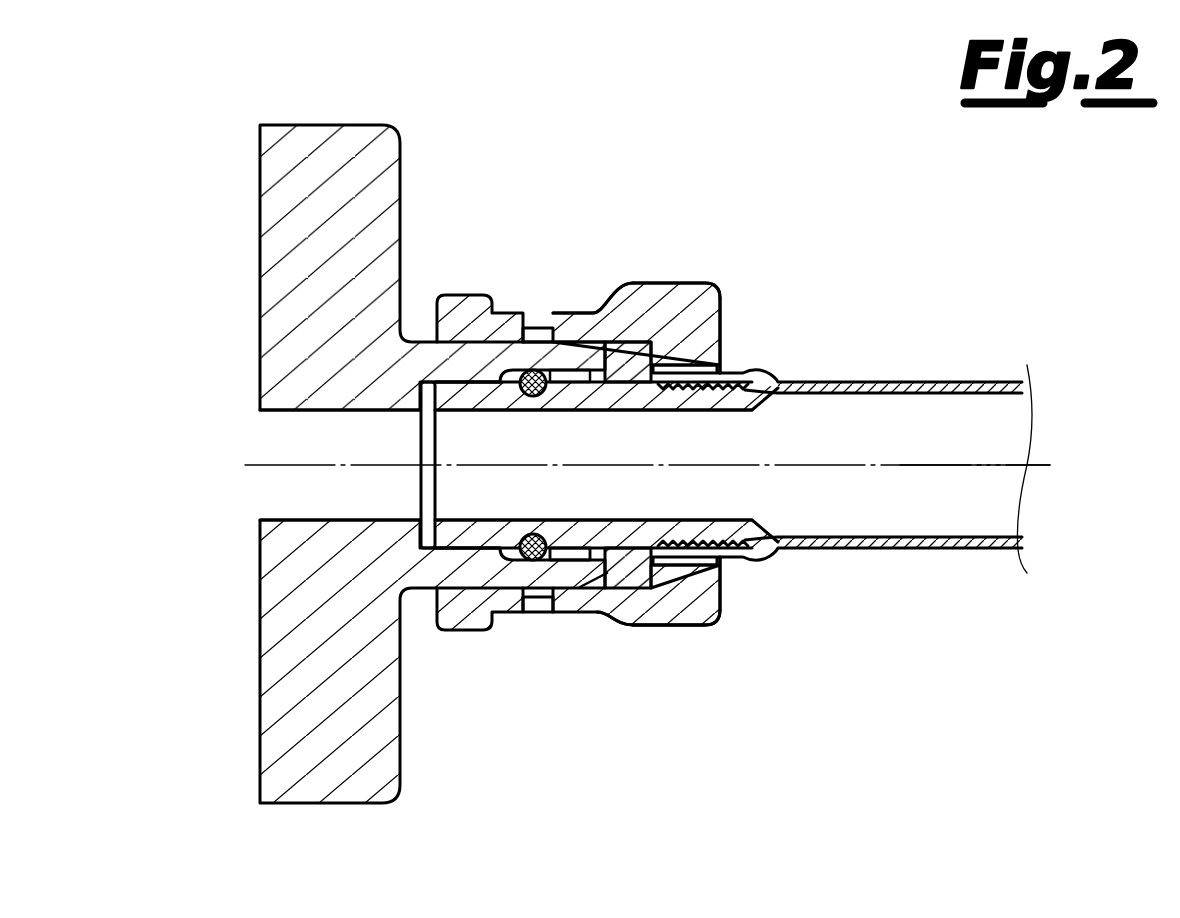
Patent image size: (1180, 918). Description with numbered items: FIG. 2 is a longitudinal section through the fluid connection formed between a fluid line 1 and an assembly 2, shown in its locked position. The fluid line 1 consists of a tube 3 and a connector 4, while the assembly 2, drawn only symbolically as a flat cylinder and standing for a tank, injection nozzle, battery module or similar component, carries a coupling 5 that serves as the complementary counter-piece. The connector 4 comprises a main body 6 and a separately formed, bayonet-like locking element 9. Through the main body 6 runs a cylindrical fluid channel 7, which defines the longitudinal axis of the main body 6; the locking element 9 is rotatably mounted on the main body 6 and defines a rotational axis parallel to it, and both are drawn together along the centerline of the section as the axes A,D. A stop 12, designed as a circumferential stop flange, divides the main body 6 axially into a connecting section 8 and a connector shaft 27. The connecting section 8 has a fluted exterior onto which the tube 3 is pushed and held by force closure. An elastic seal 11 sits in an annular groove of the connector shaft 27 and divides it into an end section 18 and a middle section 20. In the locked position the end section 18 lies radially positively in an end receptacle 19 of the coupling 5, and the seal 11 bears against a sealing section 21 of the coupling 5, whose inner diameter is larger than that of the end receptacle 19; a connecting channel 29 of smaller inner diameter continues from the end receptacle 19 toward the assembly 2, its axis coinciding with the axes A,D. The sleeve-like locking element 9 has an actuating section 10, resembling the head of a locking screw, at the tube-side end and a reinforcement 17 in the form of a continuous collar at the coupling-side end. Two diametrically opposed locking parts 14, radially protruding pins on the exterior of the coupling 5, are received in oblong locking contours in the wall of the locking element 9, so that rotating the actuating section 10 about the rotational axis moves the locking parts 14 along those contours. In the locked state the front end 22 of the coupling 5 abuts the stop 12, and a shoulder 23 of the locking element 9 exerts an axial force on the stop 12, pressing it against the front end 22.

The fluid line 1 is at (766, 200).
The assembly 2 is at (223, 142).
The tube 3 is at (907, 384).
The connector 4 is at (601, 237).
The coupling 5 is at (453, 336).
The main body 6 is at (570, 563).
The fluid channel 7 is at (735, 483).
The connecting section 8 is at (718, 380).
The locking element 9 is at (703, 642).
The actuating section 10 is at (707, 284).
The seal 11 is at (518, 368).
The stop 12 is at (630, 628).
The locking parts 14 is at (560, 370).
The reinforcement 17 is at (480, 632).
The end section 18 is at (467, 388).
The end receptacle 19 is at (420, 395).
The middle section 20 is at (606, 352).
The sealing section 21 is at (586, 380).
The front end 22 is at (652, 342).
The shoulder 23 is at (652, 573).
The connector shaft 27 is at (467, 563).
The connecting channel 29 is at (272, 492).
The axis A and rotational axis D A,D is at (1045, 465).